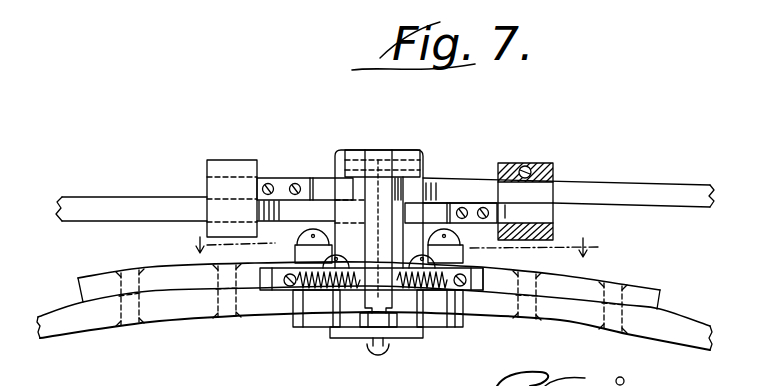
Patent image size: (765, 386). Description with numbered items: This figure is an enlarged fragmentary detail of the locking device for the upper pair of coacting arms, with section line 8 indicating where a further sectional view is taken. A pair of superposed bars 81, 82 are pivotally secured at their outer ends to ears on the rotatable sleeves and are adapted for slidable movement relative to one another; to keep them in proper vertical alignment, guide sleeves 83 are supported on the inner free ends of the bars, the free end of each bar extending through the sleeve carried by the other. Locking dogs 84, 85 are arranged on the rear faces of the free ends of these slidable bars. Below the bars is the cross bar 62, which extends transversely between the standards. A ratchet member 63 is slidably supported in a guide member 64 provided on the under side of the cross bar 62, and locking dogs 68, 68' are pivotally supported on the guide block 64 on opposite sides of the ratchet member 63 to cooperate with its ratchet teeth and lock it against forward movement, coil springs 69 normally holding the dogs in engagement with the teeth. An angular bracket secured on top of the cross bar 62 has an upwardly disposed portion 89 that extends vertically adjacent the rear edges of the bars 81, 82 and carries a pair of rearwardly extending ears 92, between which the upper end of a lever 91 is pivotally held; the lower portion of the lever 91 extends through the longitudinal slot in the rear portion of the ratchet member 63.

The section line 8- 8 is at (392, 248).
The cross bar 62 is at (167, 303).
The ratchet member 63 is at (370, 320).
The guide member 64 is at (435, 317).
The locking dog 68 is at (353, 305).
The locking dog 68' is at (495, 307).
The coil springs 69 is at (313, 310).
The slidable bar 81 is at (98, 209).
The slidable bar 82 is at (668, 193).
The guide sleeves 83 is at (228, 168).
The locking dog 84 is at (437, 217).
The locking dog 85 is at (322, 190).
The upwardly disposed portion of angular bracket 89 is at (423, 168).
The lever 91 is at (377, 190).
The rearwardly extending ears 92 is at (354, 153).